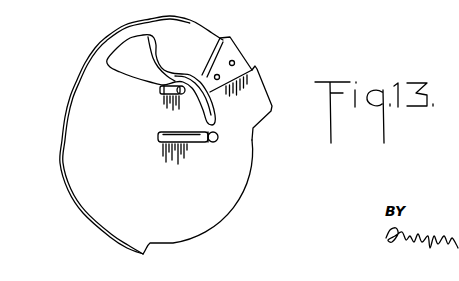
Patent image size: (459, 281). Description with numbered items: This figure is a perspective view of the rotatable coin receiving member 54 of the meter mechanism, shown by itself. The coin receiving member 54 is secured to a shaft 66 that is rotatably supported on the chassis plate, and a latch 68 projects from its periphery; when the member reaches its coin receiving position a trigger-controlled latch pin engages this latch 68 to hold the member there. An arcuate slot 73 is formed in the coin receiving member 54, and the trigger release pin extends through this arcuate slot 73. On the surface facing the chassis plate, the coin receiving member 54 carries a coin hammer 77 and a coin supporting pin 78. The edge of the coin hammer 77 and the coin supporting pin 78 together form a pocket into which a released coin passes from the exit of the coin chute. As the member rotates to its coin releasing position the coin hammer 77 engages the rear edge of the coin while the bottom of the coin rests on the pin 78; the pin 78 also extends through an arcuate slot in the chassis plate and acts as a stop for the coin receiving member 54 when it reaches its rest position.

The coin receiving member 54 is at (78, 180).
The shaft 66 is at (215, 142).
The latch 68 is at (258, 87).
The arcuate slot 73 is at (135, 65).
The coin hammer 77 is at (233, 53).
The coin supporting pin 78 is at (165, 95).